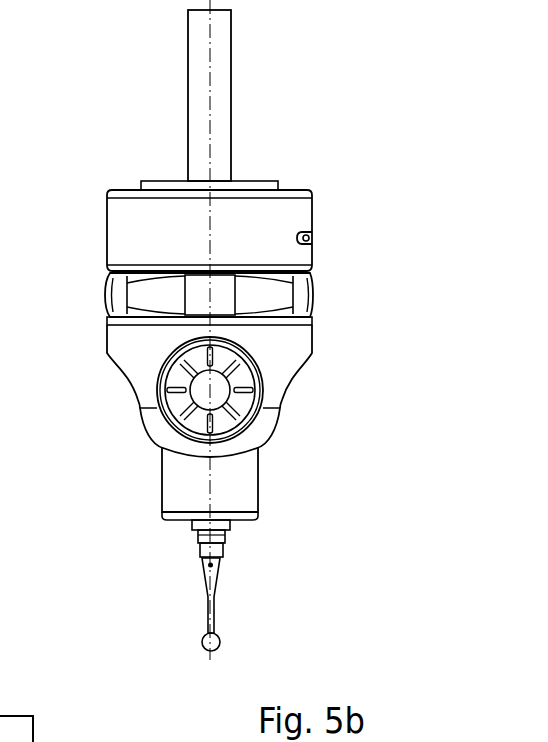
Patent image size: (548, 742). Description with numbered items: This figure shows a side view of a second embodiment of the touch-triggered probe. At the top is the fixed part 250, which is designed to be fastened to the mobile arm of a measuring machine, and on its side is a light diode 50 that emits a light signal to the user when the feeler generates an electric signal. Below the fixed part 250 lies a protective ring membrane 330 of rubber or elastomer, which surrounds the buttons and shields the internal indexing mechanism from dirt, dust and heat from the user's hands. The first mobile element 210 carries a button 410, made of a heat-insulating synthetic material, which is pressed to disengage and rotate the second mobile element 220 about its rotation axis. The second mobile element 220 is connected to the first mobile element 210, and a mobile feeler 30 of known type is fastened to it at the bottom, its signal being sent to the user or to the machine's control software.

The fixed part 250 is at (143, 222).
The light diode 50 is at (313, 236).
The protective ring membrane 330 is at (103, 300).
The first mobile element 210 is at (280, 342).
The button 410 is at (178, 403).
The second mobile element 220 is at (246, 482).
The mobile feeler 30 is at (250, 573).